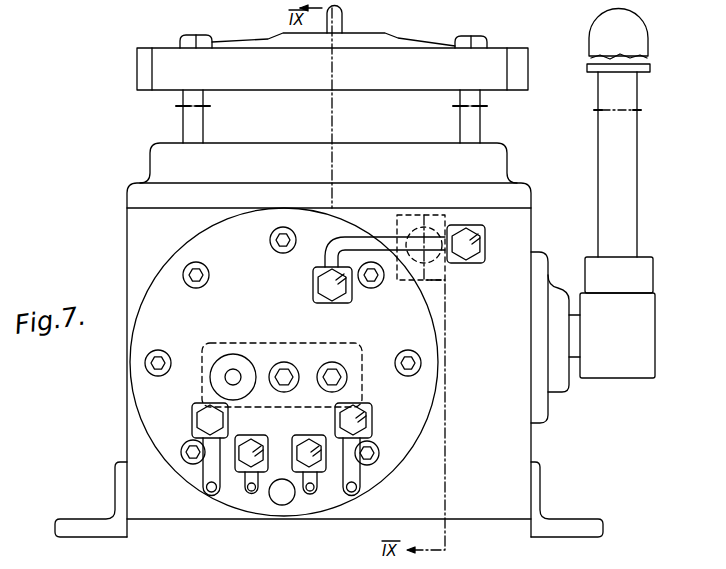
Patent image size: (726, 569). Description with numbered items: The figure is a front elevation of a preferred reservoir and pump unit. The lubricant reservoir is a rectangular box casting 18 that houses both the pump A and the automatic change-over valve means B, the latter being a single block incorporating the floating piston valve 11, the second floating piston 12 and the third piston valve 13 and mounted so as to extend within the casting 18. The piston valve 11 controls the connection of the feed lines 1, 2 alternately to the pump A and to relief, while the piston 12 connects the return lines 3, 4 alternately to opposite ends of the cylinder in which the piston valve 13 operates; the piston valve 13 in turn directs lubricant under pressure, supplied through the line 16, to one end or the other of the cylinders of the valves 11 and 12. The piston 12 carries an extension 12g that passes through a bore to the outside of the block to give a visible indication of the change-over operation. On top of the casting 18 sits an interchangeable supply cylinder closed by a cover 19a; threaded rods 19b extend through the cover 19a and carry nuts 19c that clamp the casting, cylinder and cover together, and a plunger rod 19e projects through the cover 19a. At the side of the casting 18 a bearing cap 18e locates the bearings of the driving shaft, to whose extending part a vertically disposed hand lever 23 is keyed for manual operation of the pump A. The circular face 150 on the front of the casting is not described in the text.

The feed line 1 is at (208, 467).
The feed line 2 is at (360, 470).
The return line 3 is at (319, 477).
The return line 4 is at (247, 477).
The floating piston valve 11 is at (338, 362).
The second floating piston 12 is at (233, 364).
The extension 12g is at (226, 378).
The third piston valve 13 is at (293, 362).
The line 16 is at (372, 243).
The rectangular box casting 18 is at (518, 441).
The bearing cap 18e is at (565, 392).
The cover 19a is at (413, 43).
The threaded rods 19b is at (195, 96).
The nuts 19c is at (206, 42).
The rod 19e is at (342, 12).
The hand lever 23 is at (608, 158).
The cover disc 150 is at (149, 341).
The pump A is at (410, 237).
The change-over valve means B is at (283, 346).